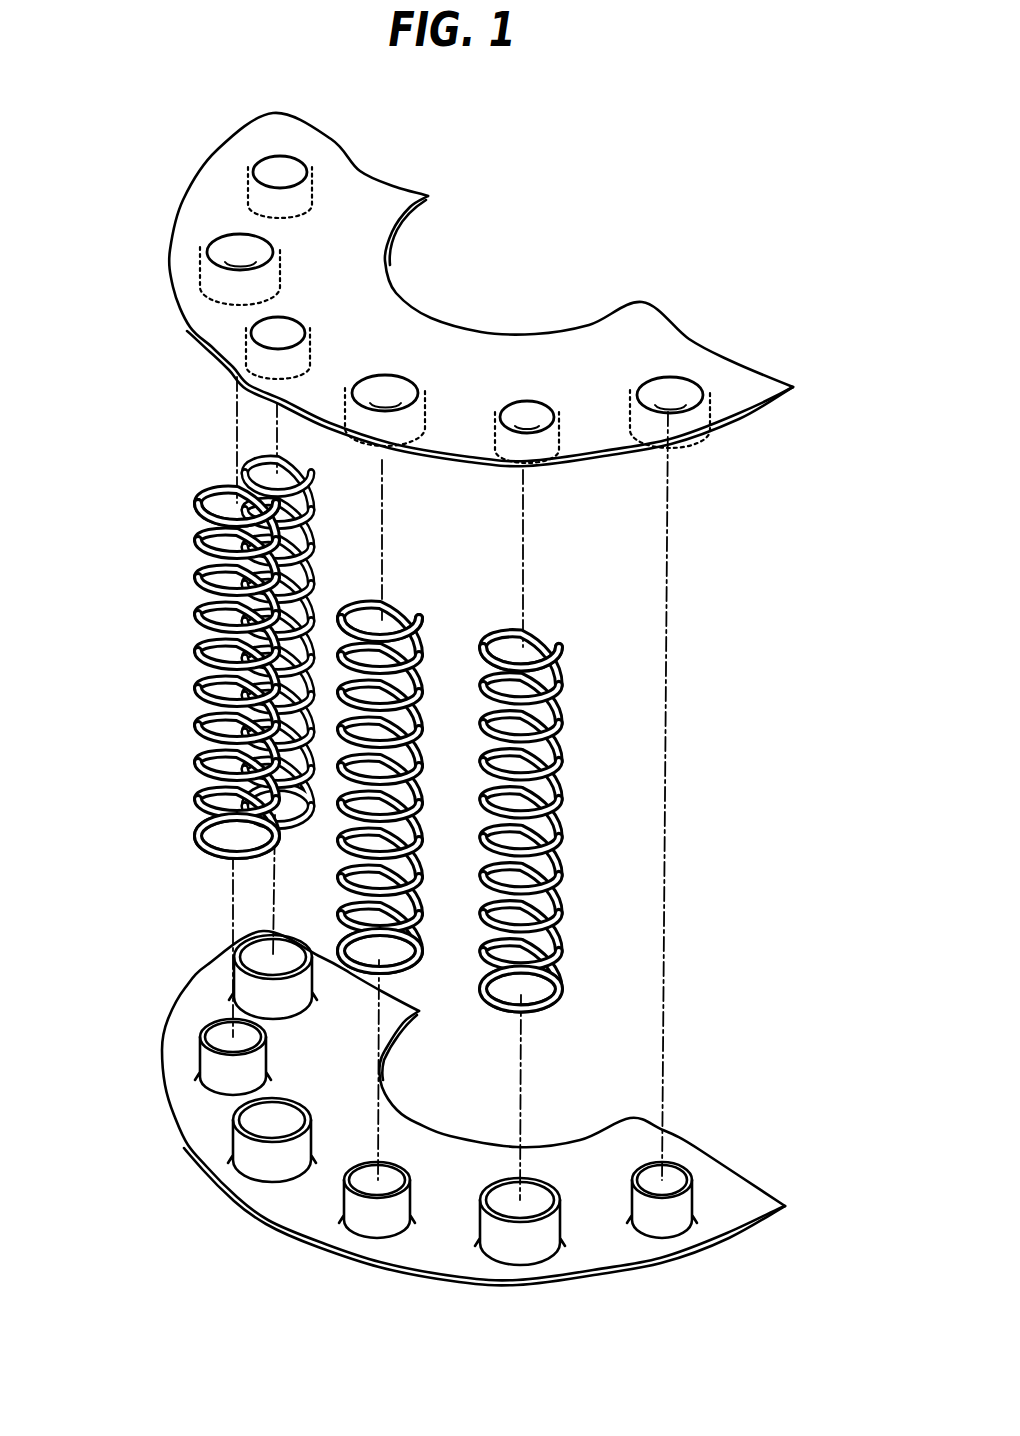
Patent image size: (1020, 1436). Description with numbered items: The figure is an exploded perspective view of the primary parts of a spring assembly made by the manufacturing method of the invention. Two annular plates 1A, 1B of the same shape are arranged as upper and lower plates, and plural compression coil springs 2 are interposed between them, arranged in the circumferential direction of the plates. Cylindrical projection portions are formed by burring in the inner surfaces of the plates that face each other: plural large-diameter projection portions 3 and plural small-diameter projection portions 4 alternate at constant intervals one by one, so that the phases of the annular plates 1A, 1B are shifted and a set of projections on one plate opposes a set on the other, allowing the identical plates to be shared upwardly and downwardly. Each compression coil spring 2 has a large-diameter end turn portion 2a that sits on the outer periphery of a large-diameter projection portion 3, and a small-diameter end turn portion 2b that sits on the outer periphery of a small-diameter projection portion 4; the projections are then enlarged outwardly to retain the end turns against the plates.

The annular plate 1A is at (275, 1193).
The annular plate 1B is at (530, 348).
The compression coil spring 2 is at (195, 687).
The end turn portion 2a is at (195, 507).
The end turn portion 2b is at (200, 840).
The large-diameter projection portion 3 is at (202, 287).
The small-diameter projection portion 4 is at (257, 357).